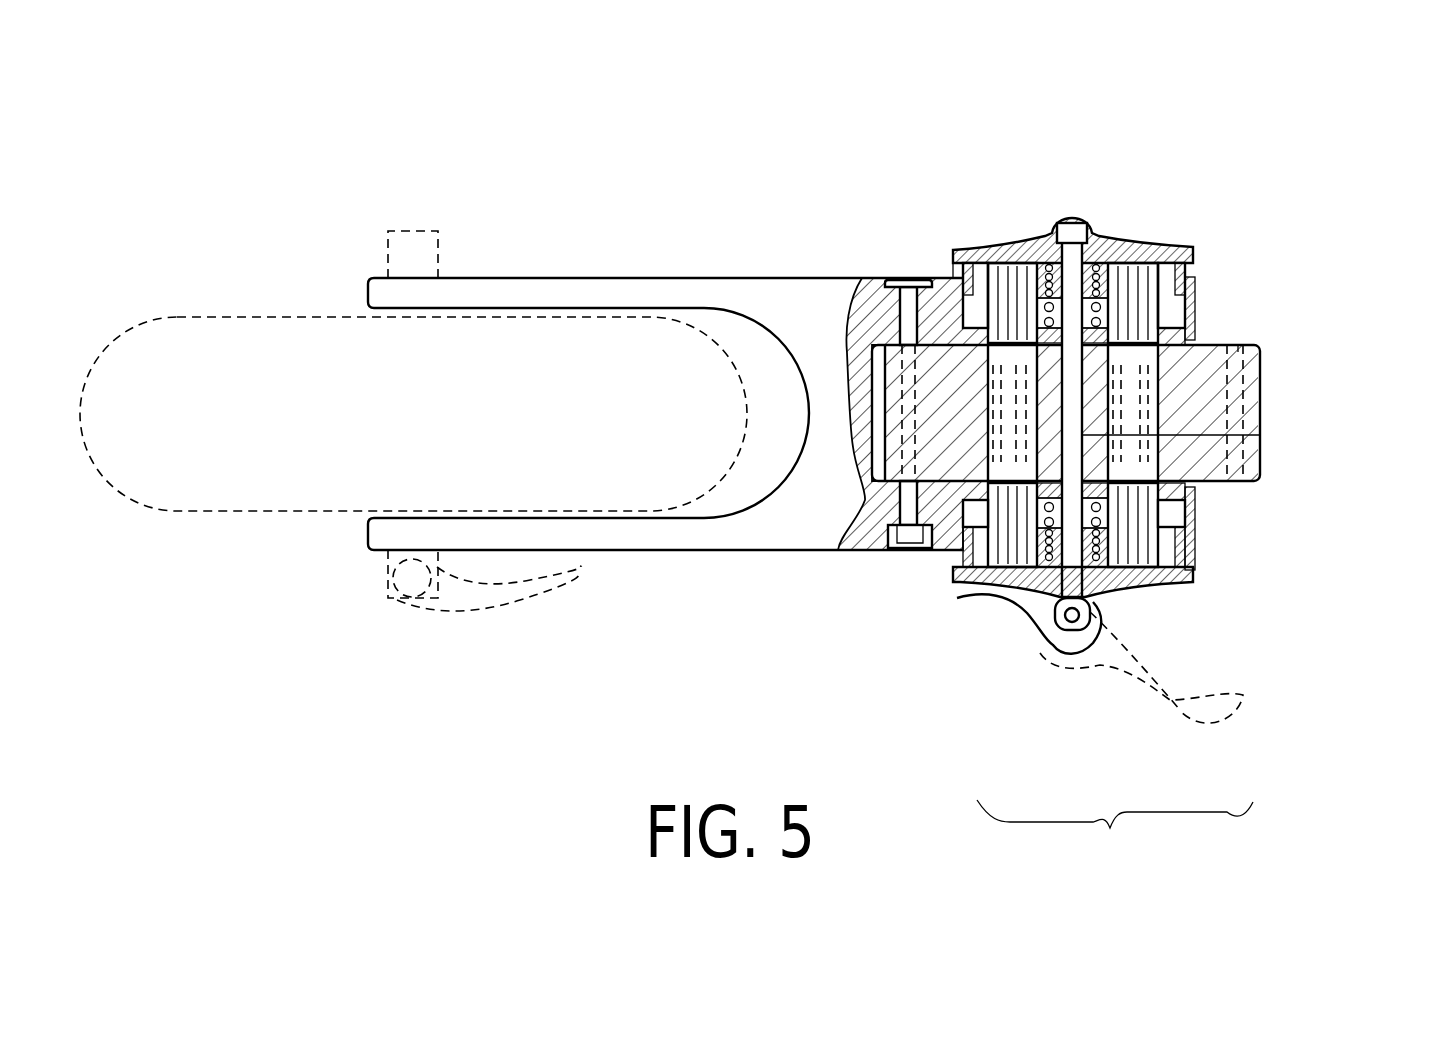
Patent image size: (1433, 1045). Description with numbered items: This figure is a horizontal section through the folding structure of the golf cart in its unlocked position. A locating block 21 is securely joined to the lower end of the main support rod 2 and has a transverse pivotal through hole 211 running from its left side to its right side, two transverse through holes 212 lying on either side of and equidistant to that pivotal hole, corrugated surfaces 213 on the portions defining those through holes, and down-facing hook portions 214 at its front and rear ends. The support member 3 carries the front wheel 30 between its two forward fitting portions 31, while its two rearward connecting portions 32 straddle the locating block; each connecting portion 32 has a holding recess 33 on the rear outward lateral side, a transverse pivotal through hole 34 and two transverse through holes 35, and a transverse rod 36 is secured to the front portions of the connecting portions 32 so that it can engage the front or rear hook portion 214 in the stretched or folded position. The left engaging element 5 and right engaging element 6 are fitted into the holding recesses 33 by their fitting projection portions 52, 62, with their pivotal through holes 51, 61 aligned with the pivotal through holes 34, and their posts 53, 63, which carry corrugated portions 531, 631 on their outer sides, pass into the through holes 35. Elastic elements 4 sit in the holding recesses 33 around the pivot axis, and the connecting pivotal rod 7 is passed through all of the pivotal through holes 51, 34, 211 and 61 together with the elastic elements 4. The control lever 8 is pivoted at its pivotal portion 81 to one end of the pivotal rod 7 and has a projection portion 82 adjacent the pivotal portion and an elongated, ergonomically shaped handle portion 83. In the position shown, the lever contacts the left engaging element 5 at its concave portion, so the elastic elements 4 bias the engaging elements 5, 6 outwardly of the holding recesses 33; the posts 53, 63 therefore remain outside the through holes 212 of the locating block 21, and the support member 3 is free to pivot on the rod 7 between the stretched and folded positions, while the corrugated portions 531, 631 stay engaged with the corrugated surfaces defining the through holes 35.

The main support rod 2 is at (1258, 337).
The locating block 21 is at (1262, 453).
The transverse pivotal through hole 211 is at (1262, 428).
The transverse through holes 212 is at (1238, 345).
The corrugated surfaces 213 is at (1143, 388).
The hook portions 214 is at (893, 413).
The support member 3 is at (595, 279).
The front wheel 30 is at (317, 340).
The fitting portions 31 is at (507, 290).
The connecting portions 32 is at (953, 277).
The holding recess 33 is at (1195, 313).
The transverse pivotal through hole 34 is at (1122, 315).
The transverse through holes 35 is at (1220, 345).
The transverse rod 36 is at (865, 500).
The elastic elements 4 is at (1047, 280).
The left engaging element 5 is at (1160, 578).
The pivotal through hole 51 is at (1100, 603).
The fitting projection portion 52 is at (1188, 567).
The posts 53 is at (1192, 557).
The corrugated portions 531 is at (1195, 525).
The right engaging element 6 is at (1113, 285).
The pivotal through hole 61 is at (1047, 272).
The fitting projection portion 62 is at (958, 266).
The posts 63 is at (971, 272).
The corrugated portions 631 is at (1013, 285).
The connecting pivotal rod 7 is at (957, 598).
The control lever 8 is at (1115, 841).
The pivotal portion 81 is at (1027, 617).
The projection portion 82 is at (1040, 653).
The elongated handle portion 83 is at (1180, 710).